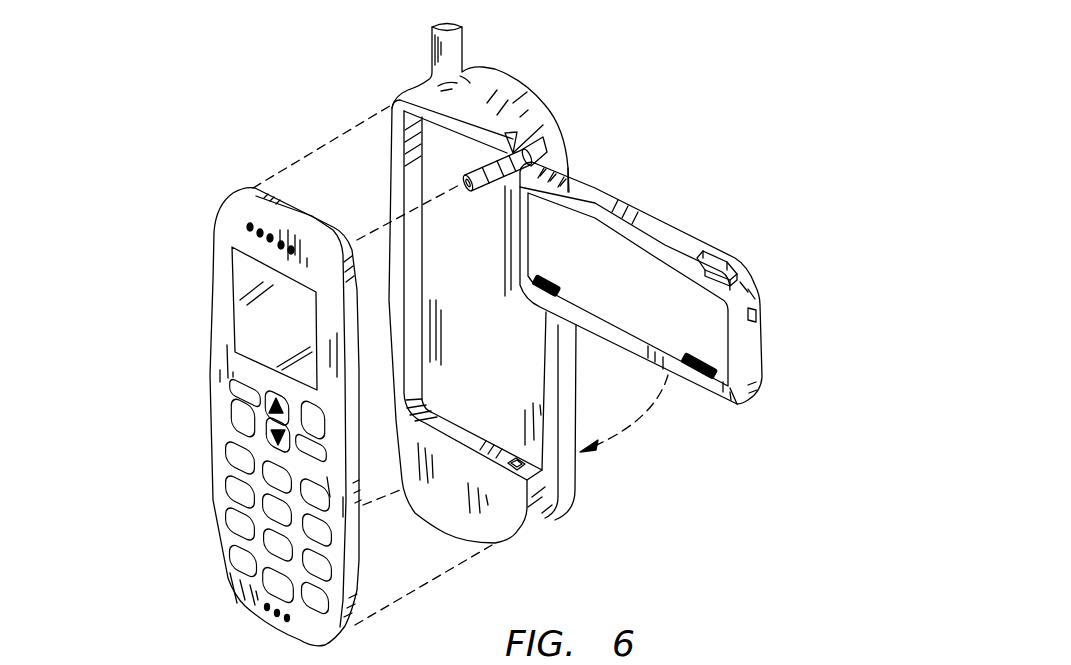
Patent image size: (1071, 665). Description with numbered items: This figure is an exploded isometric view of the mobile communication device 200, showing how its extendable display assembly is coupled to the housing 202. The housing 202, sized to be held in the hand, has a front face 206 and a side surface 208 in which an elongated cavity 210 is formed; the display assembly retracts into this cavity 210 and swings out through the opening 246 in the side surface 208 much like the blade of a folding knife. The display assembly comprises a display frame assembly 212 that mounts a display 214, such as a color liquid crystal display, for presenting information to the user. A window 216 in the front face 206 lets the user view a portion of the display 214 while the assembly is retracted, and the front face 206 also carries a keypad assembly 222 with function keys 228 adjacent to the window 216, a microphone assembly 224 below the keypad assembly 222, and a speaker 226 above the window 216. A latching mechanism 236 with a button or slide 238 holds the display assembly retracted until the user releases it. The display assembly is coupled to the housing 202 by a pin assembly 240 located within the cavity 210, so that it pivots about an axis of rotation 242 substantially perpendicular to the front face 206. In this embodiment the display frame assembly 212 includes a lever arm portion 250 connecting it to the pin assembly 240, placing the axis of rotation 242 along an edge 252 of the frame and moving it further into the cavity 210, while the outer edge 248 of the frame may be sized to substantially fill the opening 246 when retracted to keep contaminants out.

The mobile communication device 200 is at (762, 127).
The housing 202 is at (552, 150).
The front face 206 is at (220, 380).
The side surface 208 is at (560, 403).
The elongated cavity 210 is at (537, 457).
The display frame assembly 212 is at (590, 197).
The display 214 is at (653, 290).
The window 216 is at (263, 320).
The keypad assembly 222 is at (230, 483).
The microphone assembly 224 is at (263, 605).
The speaker 226 is at (263, 228).
The function keys 228 is at (230, 523).
The latching mechanism 236 is at (757, 314).
The button or slide 238 is at (735, 267).
The pin assembly 240 is at (466, 182).
The axis of rotation 242 is at (505, 137).
The opening 246 is at (528, 436).
The outer edge 248 is at (703, 243).
The lever arm portion 250 is at (495, 193).
The edge 252 is at (505, 250).